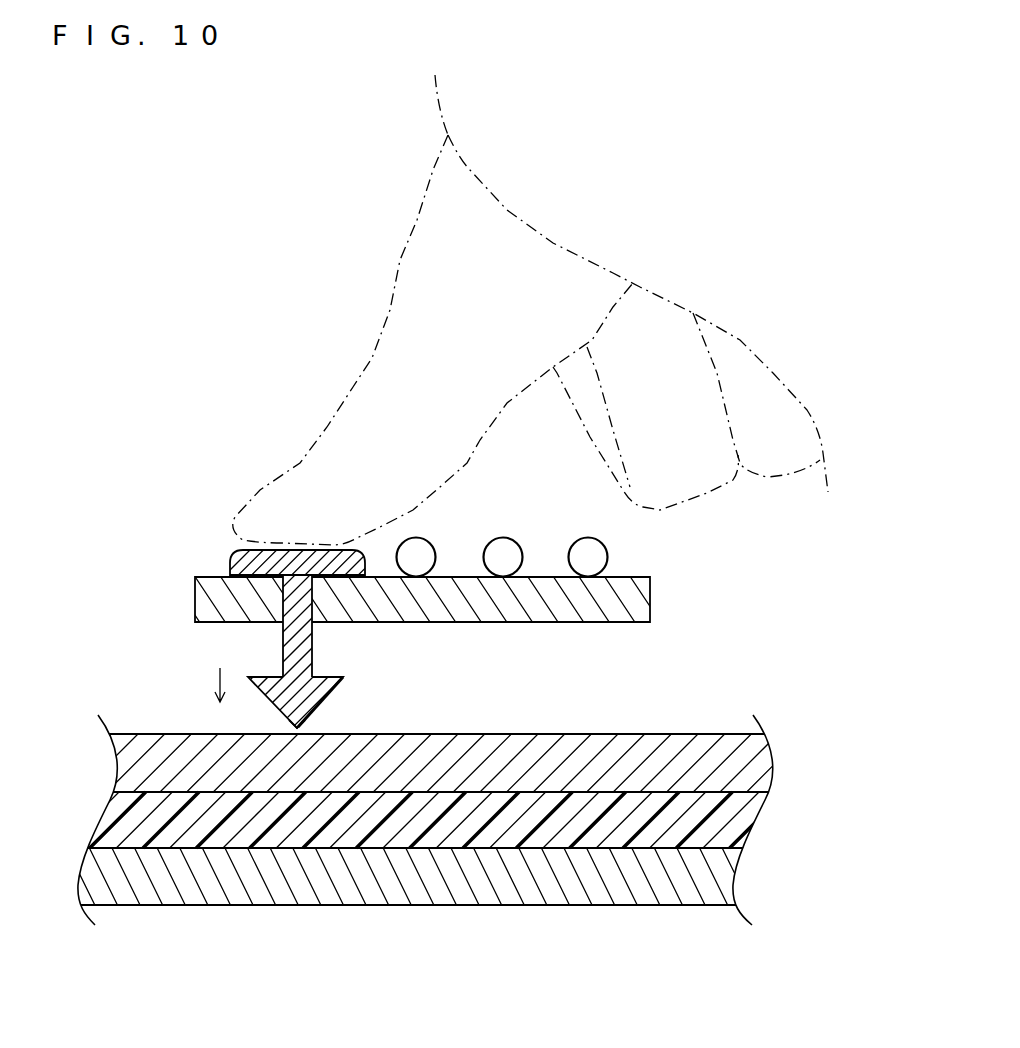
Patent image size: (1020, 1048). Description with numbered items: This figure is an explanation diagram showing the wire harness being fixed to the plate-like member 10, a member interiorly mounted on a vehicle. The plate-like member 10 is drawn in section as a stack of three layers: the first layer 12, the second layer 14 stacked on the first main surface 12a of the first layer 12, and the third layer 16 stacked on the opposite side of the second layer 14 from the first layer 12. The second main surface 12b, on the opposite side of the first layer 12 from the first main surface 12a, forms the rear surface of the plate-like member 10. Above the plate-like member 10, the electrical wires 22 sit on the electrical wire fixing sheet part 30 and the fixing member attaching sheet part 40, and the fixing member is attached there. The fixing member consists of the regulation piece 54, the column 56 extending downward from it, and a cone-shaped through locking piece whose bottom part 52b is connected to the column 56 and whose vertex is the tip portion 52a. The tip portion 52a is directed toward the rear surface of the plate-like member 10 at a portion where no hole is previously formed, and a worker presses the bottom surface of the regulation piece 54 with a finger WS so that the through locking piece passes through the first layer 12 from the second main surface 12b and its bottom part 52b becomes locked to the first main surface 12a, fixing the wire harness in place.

The finger WS is at (340, 432).
The electrical wires 22 is at (503, 547).
The electrical wire fixing sheet part 30 is at (455, 599).
The fixing member attaching sheet part 40 is at (650, 595).
The regulation piece 54 is at (232, 568).
The column 56 is at (290, 653).
The tip portion 52a is at (300, 720).
The bottom part 52b is at (328, 675).
The plate-like member 10 is at (429, 825).
The first layer 12 is at (773, 768).
The first main surface 12a is at (545, 803).
The second main surface 12b is at (595, 734).
The second layer 14 is at (743, 822).
The third layer 16 is at (723, 873).